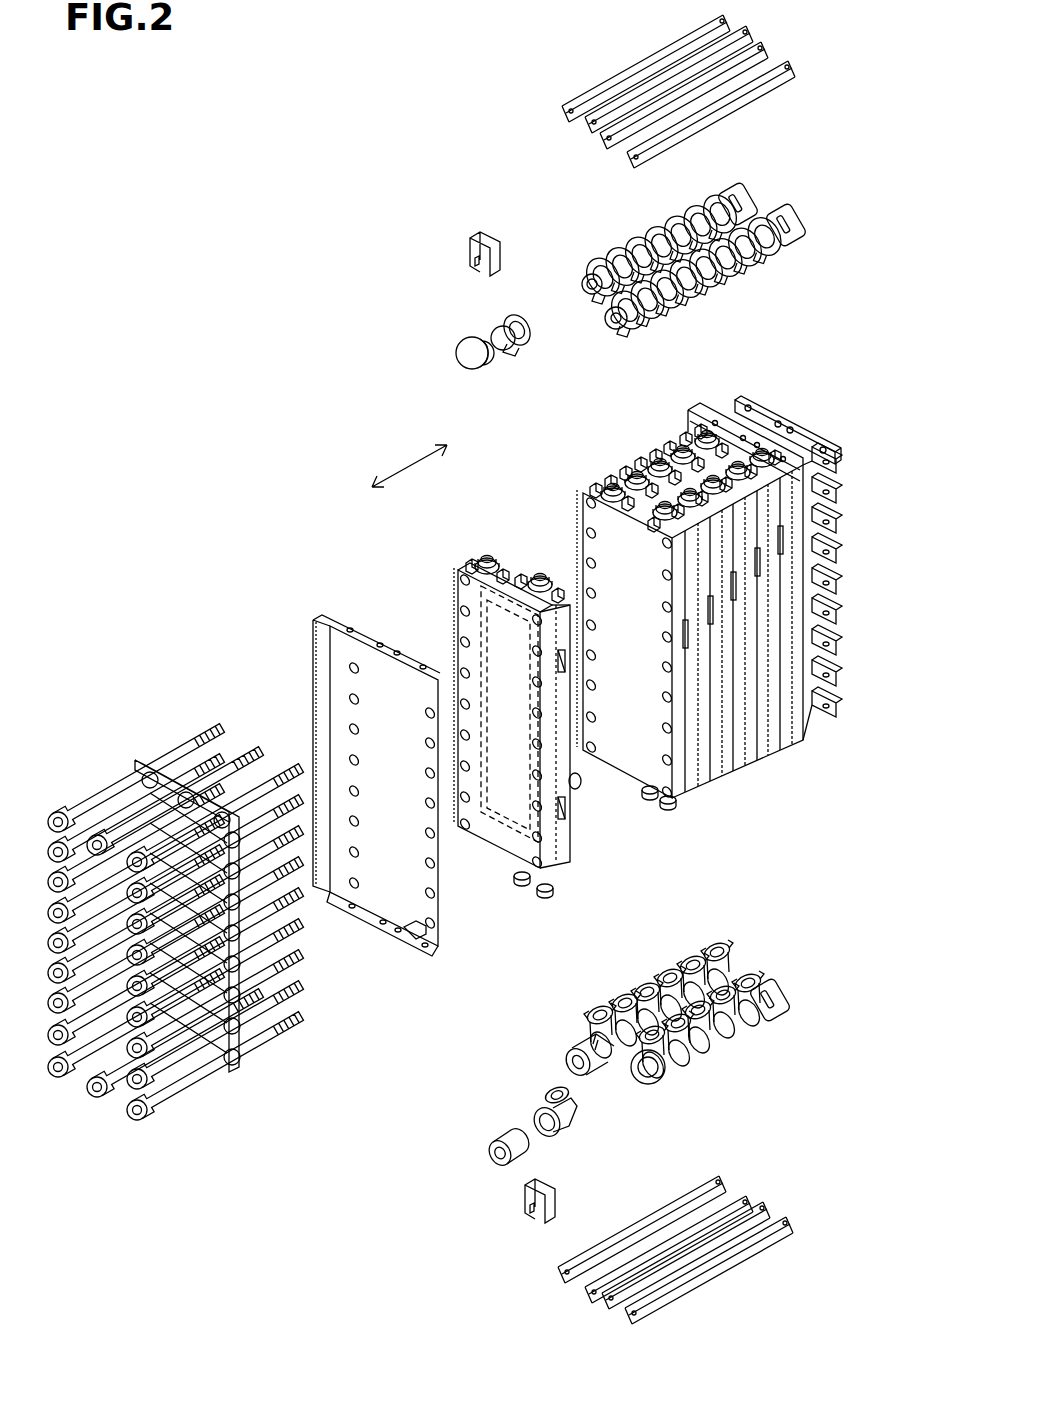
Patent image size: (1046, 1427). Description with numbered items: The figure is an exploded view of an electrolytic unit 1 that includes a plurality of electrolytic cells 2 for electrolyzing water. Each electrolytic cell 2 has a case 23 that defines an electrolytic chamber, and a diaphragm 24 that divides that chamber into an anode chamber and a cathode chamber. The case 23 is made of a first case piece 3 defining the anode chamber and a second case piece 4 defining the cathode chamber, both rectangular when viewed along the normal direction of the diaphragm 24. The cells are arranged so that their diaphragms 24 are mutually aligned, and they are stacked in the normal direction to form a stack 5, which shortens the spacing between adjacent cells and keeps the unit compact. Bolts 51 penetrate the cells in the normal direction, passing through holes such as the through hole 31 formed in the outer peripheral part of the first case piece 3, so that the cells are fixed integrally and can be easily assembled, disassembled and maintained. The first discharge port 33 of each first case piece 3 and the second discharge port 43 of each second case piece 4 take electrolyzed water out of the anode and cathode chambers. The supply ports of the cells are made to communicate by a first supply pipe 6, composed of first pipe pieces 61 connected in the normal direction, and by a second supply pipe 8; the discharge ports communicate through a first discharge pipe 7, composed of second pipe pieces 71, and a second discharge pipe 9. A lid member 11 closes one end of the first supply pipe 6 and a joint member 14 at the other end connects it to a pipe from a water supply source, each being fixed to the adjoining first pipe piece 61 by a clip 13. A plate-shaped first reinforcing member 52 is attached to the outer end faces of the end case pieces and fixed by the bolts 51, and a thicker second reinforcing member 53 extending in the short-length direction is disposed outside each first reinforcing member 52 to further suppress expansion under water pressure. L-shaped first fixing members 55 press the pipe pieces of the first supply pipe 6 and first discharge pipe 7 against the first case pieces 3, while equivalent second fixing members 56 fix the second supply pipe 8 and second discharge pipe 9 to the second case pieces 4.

The electrolytic unit 1 is at (310, 465).
The electrolytic cell 2 is at (487, 825).
The first case piece 3 is at (463, 683).
The second case piece 4 is at (565, 830).
The stack 5 is at (738, 778).
The first supply pipe 6 is at (722, 1060).
The first discharge pipe 7 is at (650, 225).
The second supply pipe 8 is at (645, 972).
The second discharge pipe 9 is at (755, 300).
The lid member 11 is at (465, 352).
The clip 13 is at (489, 230).
The joint member 14 is at (490, 1160).
The case 23 is at (573, 782).
The diaphragm 24 is at (500, 632).
The through hole 31 is at (538, 870).
The first discharge port 33 is at (488, 552).
The second discharge port 43 is at (540, 570).
The bolt 51 is at (95, 800).
The first reinforcing member 52 is at (800, 722).
The second reinforcing member 53 is at (785, 440).
The first fixing member 55 is at (647, 55).
The second fixing member 56 is at (750, 80).
The first pipe piece 61 is at (580, 1117).
The second pipe piece 71 is at (522, 333).